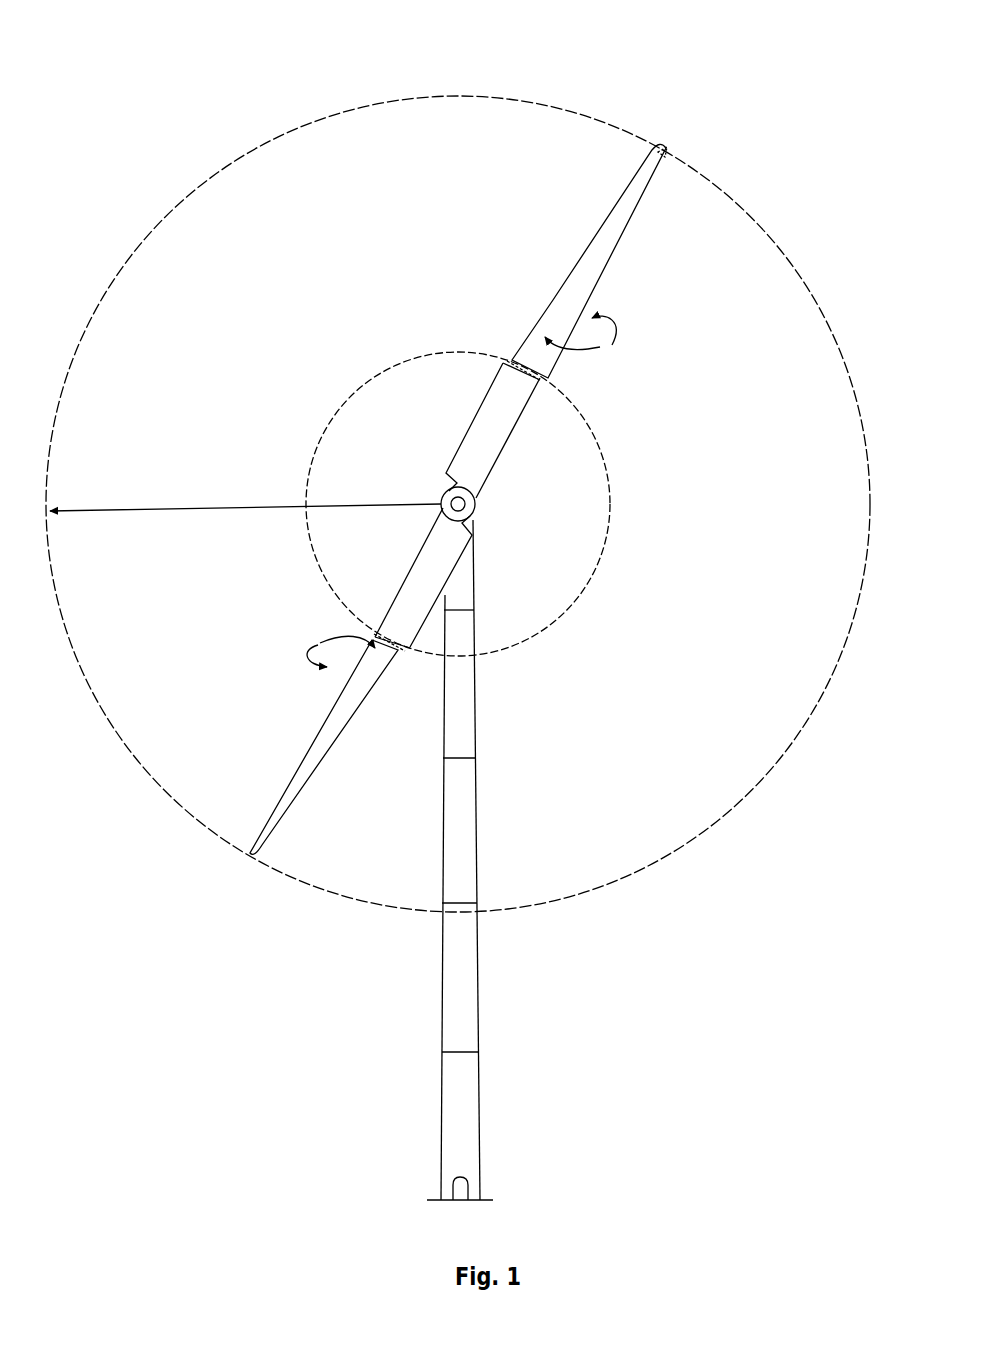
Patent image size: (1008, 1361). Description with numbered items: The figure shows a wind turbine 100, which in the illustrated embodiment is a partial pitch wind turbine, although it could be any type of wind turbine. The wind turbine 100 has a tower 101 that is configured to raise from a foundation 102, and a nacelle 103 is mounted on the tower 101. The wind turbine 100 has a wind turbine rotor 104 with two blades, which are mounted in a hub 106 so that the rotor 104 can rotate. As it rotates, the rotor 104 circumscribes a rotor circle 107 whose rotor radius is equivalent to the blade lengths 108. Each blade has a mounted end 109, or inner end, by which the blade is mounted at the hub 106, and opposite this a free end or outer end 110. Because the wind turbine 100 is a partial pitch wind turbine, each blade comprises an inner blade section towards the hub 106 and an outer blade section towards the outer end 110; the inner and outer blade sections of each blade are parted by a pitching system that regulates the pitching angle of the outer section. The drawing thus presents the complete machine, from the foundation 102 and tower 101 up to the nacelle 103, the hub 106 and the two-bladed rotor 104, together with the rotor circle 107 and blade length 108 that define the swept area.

The wind turbine 100 is at (312, 122).
The tower 101 is at (460, 1022).
The foundation 102 is at (489, 1190).
The nacelle 103 is at (481, 497).
The wind turbine rotor 104 is at (356, 276).
The hub 106 is at (470, 505).
The rotor circle 107 is at (735, 808).
The blade length 108 is at (228, 497).
The mounted end 109 is at (437, 468).
The outer end 110 is at (667, 116).